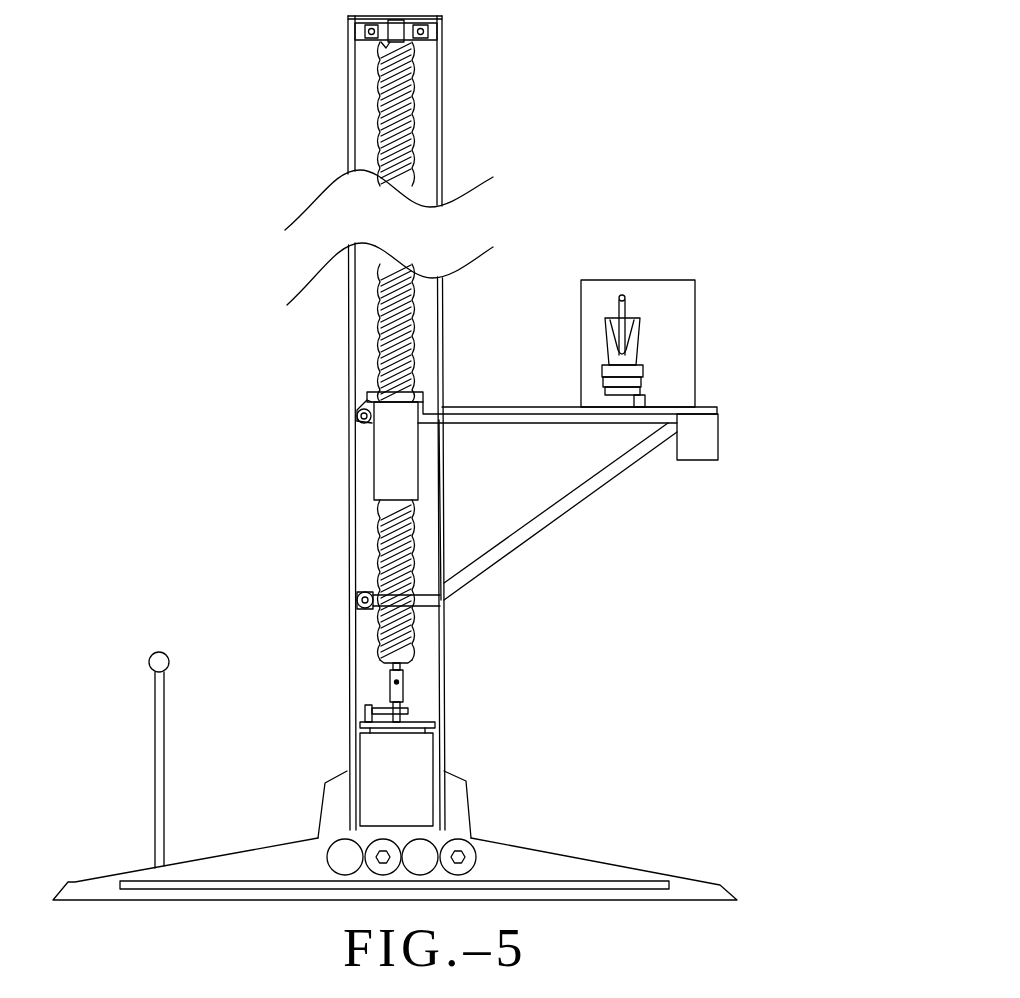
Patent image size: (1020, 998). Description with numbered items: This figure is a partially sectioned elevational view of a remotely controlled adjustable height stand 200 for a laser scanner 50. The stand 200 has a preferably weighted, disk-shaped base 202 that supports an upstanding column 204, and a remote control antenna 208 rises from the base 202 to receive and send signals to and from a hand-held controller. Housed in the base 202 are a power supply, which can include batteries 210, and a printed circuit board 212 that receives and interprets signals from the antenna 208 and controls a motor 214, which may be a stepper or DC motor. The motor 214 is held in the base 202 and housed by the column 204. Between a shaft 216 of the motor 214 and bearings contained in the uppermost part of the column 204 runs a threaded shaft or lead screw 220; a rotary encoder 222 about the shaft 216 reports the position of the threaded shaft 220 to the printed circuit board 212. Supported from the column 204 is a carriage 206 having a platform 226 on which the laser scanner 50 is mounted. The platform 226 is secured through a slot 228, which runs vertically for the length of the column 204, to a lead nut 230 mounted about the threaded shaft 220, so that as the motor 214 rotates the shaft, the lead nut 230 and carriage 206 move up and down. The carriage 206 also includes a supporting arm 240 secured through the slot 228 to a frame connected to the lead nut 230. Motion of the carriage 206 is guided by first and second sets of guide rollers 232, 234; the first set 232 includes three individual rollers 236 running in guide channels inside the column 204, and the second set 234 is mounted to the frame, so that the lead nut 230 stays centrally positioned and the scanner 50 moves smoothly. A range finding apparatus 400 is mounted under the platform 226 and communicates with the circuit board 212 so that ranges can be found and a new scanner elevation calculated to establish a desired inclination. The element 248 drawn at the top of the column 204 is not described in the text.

The remotely controlled adjustable height stand 200 is at (265, 147).
The laser scanner 50 is at (614, 265).
The base 202 is at (570, 857).
The upstanding column 204 is at (450, 620).
The carriage 206 is at (612, 488).
The remote control antenna 208 is at (164, 755).
The batteries 210 is at (470, 838).
The printed circuit board 212 is at (660, 887).
The motor 214 is at (405, 775).
The shaft 216 is at (398, 700).
The threaded shaft or lead screw 220 is at (420, 513).
The rotary encoder 222 is at (435, 722).
The platform 226 is at (712, 407).
The slot 228 is at (440, 570).
The lead nut 230 is at (366, 401).
The first set of guide rollers 232 is at (352, 422).
The second set of guide rollers 234 is at (340, 598).
The rollers 236 is at (352, 414).
The supporting arm 240 is at (532, 534).
The top bearing assembly 248 is at (430, 31).
The range finding apparatus 400 is at (718, 436).